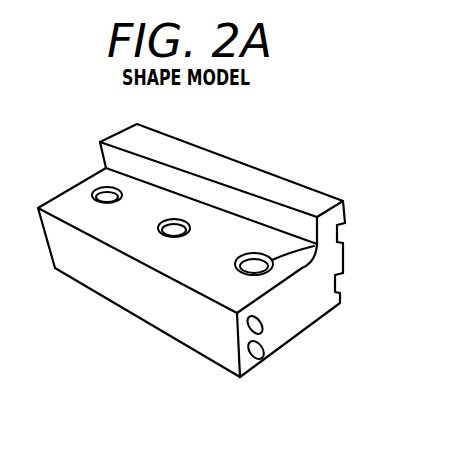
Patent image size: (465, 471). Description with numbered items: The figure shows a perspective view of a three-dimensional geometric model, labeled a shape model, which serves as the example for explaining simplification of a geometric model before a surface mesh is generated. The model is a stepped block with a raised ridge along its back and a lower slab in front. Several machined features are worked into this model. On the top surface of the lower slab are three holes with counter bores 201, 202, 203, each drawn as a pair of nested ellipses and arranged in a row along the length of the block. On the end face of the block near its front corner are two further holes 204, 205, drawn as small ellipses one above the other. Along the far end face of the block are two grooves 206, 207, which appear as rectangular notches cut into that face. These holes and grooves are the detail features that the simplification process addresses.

The hole with counter bore 201 is at (100, 191).
The hole with counter bore 202 is at (160, 233).
The hole with counter bore 203 is at (237, 265).
The hole 204 is at (250, 334).
The hole 205 is at (249, 358).
The groove 206 is at (335, 290).
The groove 207 is at (338, 236).